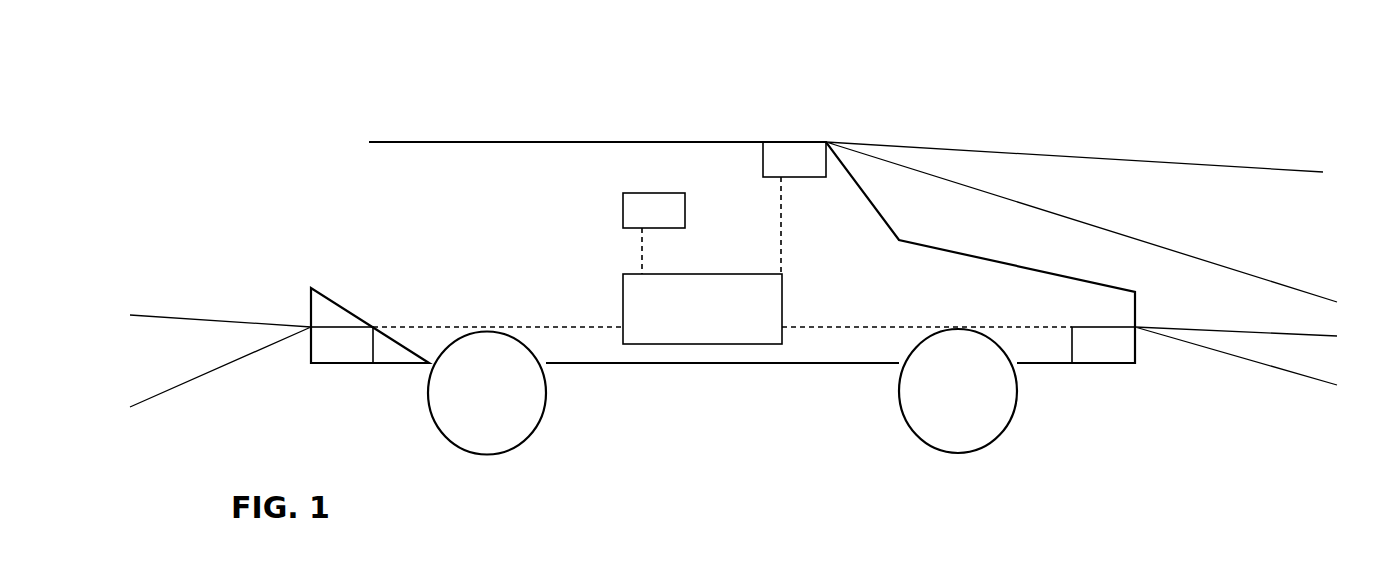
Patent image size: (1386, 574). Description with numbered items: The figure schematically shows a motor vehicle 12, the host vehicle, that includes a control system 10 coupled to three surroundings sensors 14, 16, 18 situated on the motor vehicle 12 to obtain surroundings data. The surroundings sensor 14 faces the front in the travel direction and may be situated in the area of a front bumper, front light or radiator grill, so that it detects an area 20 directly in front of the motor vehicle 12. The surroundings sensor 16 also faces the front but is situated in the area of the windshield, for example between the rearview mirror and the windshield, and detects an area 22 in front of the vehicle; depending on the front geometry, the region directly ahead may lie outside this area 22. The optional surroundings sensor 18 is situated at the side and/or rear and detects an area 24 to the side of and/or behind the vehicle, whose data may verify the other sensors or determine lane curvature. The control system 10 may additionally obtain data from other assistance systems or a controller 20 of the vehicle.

The control system 10 is at (702, 309).
The motor vehicle 12 is at (413, 142).
The surroundings sensor 14 is at (1103, 345).
The surroundings sensor 16 is at (794, 208).
The surroundings sensor 18 is at (342, 345).
The area in front of the motor vehicle 20 is at (980, 289).
The area in front of the motor vehicle 22 is at (1081, 222).
The area to the side of and/or behind the motor vehicle 24 is at (220, 361).